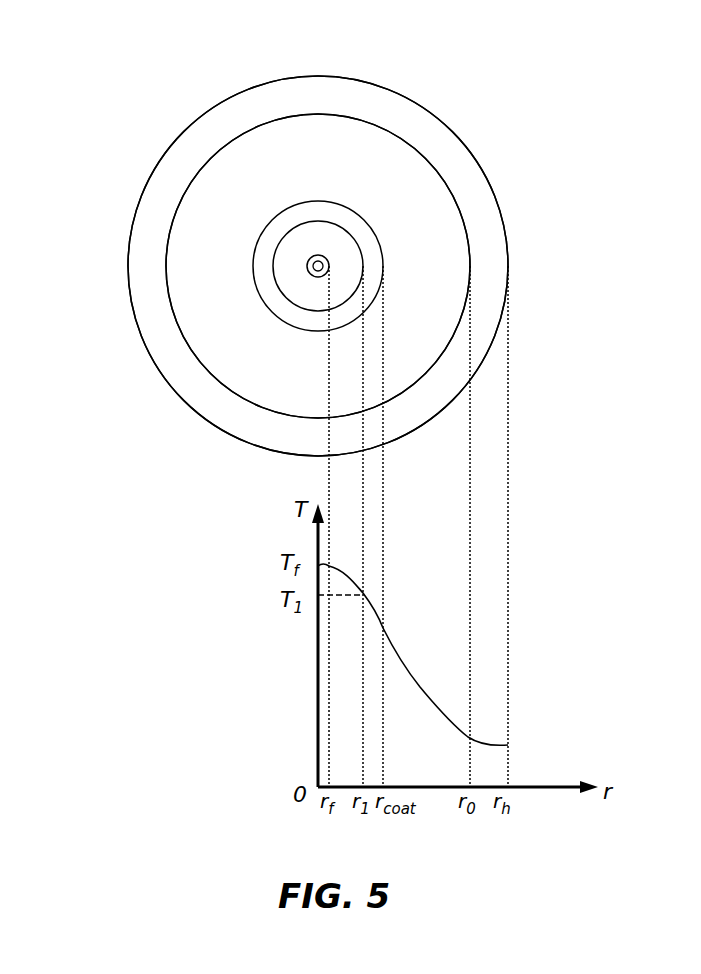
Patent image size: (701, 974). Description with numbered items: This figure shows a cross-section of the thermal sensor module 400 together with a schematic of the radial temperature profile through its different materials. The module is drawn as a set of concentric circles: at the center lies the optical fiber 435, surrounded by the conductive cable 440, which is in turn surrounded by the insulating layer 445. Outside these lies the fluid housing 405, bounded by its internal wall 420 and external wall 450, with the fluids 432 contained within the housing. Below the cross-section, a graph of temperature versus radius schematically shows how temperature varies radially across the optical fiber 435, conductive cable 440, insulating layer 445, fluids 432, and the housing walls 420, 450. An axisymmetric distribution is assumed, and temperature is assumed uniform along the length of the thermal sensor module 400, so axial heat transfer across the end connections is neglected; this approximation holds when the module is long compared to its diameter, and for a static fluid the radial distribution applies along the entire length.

The thermal sensor module 400 is at (509, 46).
The fluid housing 405 is at (350, 90).
The internal wall 420 is at (445, 188).
The fluids 432 is at (212, 180).
The optical fiber 435 is at (308, 263).
The conductive cable 440 is at (303, 293).
The insulating layer 445 is at (260, 280).
The external wall 450 is at (505, 236).